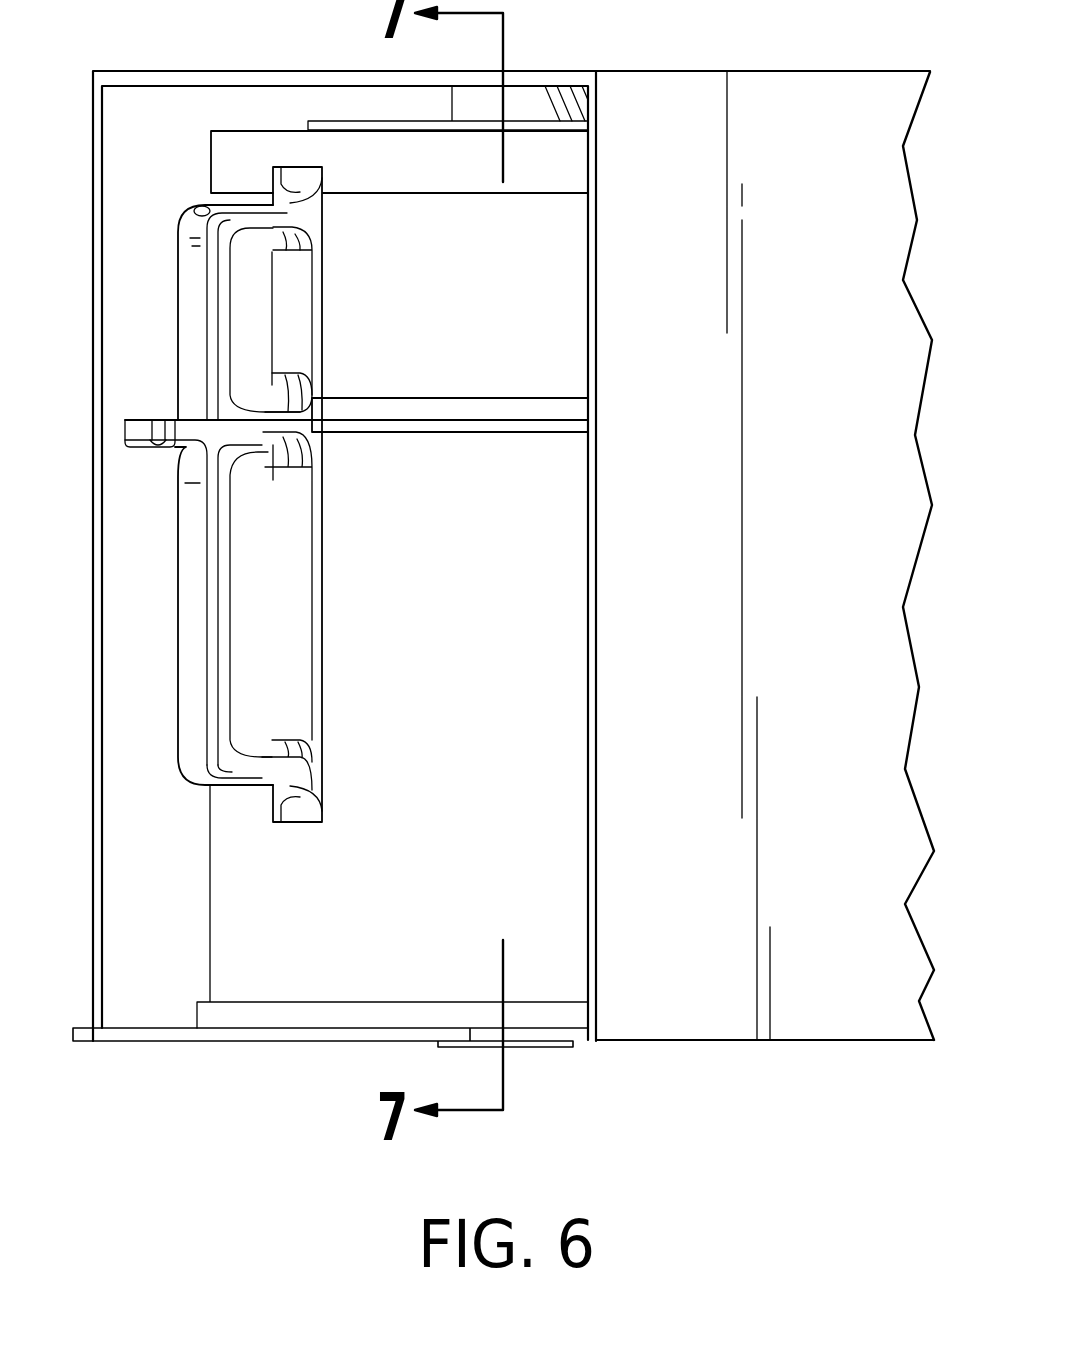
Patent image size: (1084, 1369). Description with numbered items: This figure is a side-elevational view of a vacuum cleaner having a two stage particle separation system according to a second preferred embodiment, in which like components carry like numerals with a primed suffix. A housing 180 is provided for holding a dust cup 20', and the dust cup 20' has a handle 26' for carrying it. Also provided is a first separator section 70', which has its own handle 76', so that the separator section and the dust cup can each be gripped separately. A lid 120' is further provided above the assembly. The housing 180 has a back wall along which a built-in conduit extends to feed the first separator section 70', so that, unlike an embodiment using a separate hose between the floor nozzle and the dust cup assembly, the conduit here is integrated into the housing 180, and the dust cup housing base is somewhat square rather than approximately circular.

The dust cup 20' is at (503, 559).
The first separator section 70' is at (394, 563).
The lid 120' is at (399, 96).
The housing 180 is at (705, 90).
The handle 76' is at (211, 312).
The handle 26' is at (211, 605).